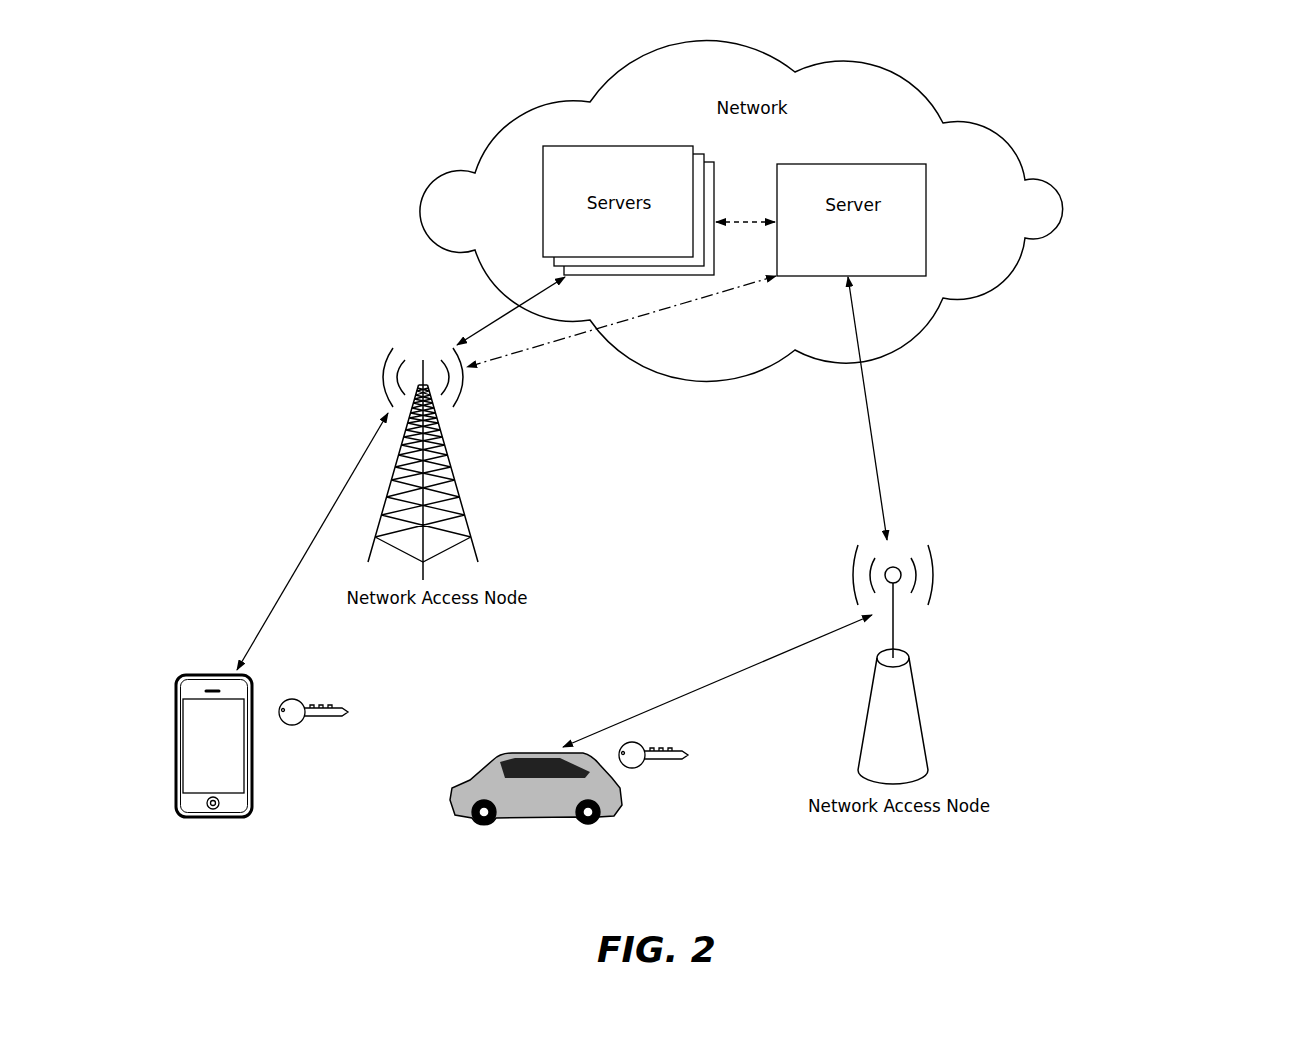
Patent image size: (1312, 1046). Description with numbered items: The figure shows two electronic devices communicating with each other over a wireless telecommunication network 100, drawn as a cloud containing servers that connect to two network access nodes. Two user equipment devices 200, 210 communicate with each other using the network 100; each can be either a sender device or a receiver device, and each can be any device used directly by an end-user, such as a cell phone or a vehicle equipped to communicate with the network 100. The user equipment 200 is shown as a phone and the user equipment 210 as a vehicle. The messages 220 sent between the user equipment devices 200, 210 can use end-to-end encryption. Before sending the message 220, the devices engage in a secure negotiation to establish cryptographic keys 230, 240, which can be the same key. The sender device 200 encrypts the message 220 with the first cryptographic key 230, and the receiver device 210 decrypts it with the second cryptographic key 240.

The network 100 is at (1230, 105).
The user equipment device 200 is at (216, 780).
The user equipment device 210 is at (536, 823).
The message 220 is at (256, 553).
The first cryptographic key 230 is at (315, 703).
The second cryptographic key 240 is at (668, 746).